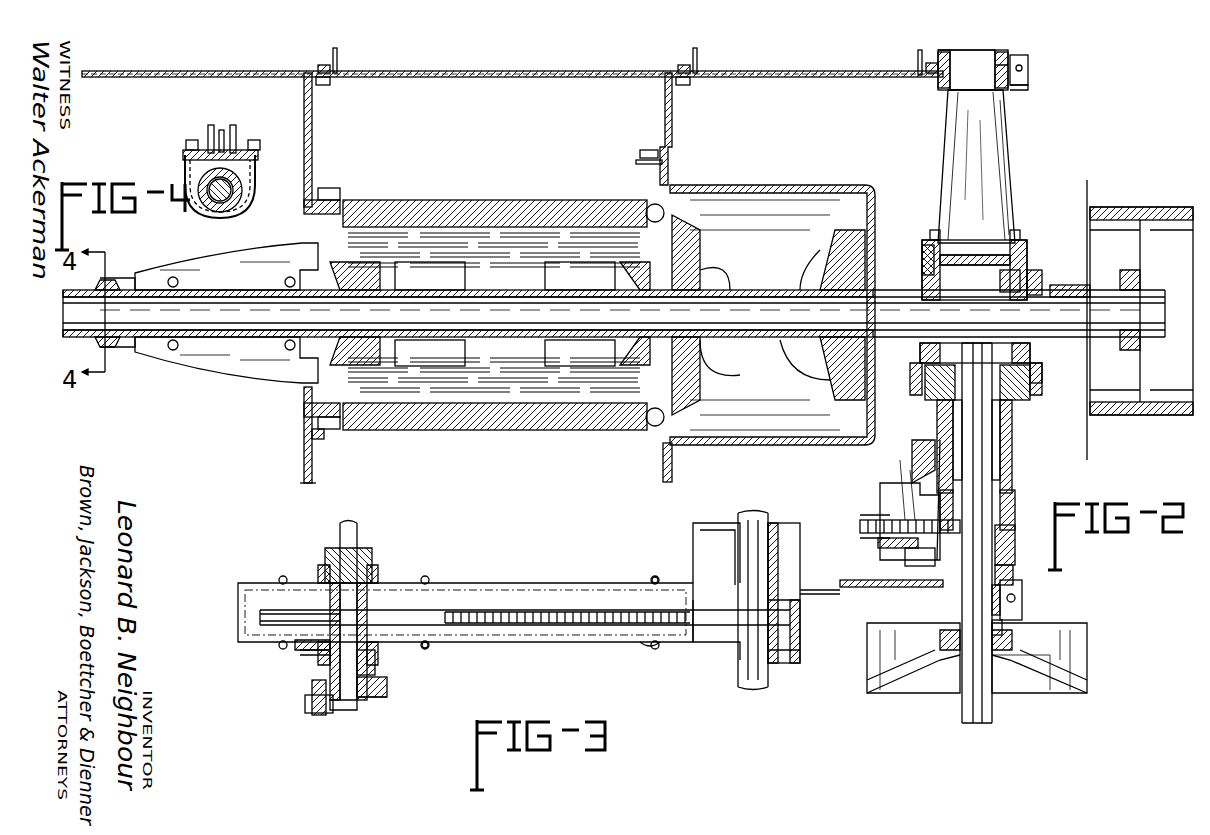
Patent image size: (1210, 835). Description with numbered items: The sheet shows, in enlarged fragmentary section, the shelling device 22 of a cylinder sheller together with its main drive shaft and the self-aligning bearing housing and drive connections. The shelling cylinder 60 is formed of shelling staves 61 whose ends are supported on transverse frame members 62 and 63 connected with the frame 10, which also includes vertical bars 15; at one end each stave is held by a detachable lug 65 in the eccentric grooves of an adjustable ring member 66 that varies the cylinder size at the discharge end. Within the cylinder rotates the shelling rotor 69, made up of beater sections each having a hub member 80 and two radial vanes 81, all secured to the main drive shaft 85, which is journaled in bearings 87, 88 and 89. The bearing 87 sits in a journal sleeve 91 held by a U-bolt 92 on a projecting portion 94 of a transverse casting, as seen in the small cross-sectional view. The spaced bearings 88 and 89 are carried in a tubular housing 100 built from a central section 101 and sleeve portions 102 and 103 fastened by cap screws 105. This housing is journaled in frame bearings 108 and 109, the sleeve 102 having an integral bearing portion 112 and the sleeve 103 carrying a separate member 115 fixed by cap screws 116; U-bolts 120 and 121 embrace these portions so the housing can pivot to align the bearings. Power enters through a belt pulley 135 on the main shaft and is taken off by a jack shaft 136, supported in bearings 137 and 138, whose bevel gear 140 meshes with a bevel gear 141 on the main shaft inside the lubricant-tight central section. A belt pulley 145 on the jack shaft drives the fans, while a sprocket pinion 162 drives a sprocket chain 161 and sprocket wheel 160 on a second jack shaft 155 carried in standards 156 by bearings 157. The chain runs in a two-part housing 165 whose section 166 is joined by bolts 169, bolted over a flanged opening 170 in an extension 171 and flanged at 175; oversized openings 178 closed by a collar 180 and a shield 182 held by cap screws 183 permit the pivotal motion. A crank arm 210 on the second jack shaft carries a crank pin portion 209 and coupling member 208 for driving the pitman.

In FIG. 2, the frame 10 is at (395, 71).
In FIG. 3, the frame 10 is at (826, 604).
In FIG. 2, the vertical bars 15 is at (335, 60).
In FIG. 2, the shelling device 22 is at (772, 185).
In FIG. 2, the shelling cylinder 60 is at (372, 200).
In FIG. 2, the shelling staves 61 is at (478, 204).
In FIG. 2, the transverse frame member 62 is at (305, 104).
In FIG. 2, the transverse frame member 63 is at (672, 118).
In FIG. 2, the detachable lug 65 is at (335, 194).
In FIG. 2, the adjustable ring member 66 is at (316, 455).
In FIG. 2, the shelling rotor 69 is at (445, 270).
In FIG. 2, the hub member 80 is at (575, 300).
In FIG. 2, the vanes 81 is at (398, 270).
In FIG. 2, the main drive shaft 85 is at (878, 300).
In FIG. 2, the bearing 87 is at (128, 345).
In FIG. 2, the bearing 88 is at (950, 270).
In FIG. 2, the bearing 89 is at (1045, 285).
In FIG. 2, the journal sleeve 91 is at (112, 286).
In FIG. 4, the journal sleeve 91 is at (232, 212).
In FIG. 4, the U-bolt 92 is at (210, 218).
In FIG. 4, the projecting portion 94 is at (208, 130).
In FIG. 2, the tubular housing 100 is at (1030, 238).
In FIG. 2, the central section 101 is at (1038, 372).
In FIG. 2, the sleeve portion 102 is at (1010, 155).
In FIG. 2, the sleeve portion 103 is at (1012, 480).
In FIG. 2, the cap screws 105 is at (932, 242).
In FIG. 2, the bearing 108 is at (1024, 68).
In FIG. 2, the bearing 109 is at (1016, 596).
In FIG. 2, the bearing portion 112 is at (995, 50).
In FIG. 2, the member 115 is at (1010, 612).
In FIG. 2, the cap screws 116 is at (1012, 572).
In FIG. 2, the U-bolt 120 is at (1022, 88).
In FIG. 2, the U-bolt 121 is at (1050, 609).
In FIG. 2, the belt pulley 135 is at (1135, 210).
In FIG. 2, the jack shaft 136 is at (970, 425).
In FIG. 3, the jack shaft 136 is at (755, 530).
In FIG. 2, the bearing 137 is at (950, 410).
In FIG. 2, the bearing 138 is at (1060, 632).
In FIG. 2, the bevel gear 140 is at (925, 380).
In FIG. 2, the bevel gear 141 is at (1000, 282).
In FIG. 2, the belt pulley 145 is at (1030, 660).
In FIG. 3, the second jack shaft 155 is at (350, 535).
In FIG. 3, the standards 156 is at (375, 660).
In FIG. 3, the bearings 157 is at (387, 680).
In FIG. 3, the sprocket wheel 160 is at (395, 608).
In FIG. 2, the sprocket chain 161 is at (870, 518).
In FIG. 3, the sprocket chain 161 is at (505, 608).
In FIG. 2, the sprocket pinion 162 is at (1000, 520).
In FIG. 3, the sprocket pinion 162 is at (790, 598).
In FIG. 3, the two-part housing 165 is at (560, 585).
In FIG. 2, the housing section 166 is at (905, 548).
In FIG. 3, the bolts 169 is at (430, 650).
In FIG. 2, the flanged opening 170 is at (900, 495).
In FIG. 2, the extension 171 is at (920, 462).
In FIG. 3, the flange 175 is at (680, 648).
In FIG. 3, the openings 178 is at (318, 572).
In FIG. 3, the collar 180 is at (366, 552).
In FIG. 3, the shield 182 is at (300, 646).
In FIG. 3, the cap screws 183 is at (305, 653).
In FIG. 3, the coupling member 208 is at (312, 715).
In FIG. 3, the crank pin portion 209 is at (340, 708).
In FIG. 3, the crank arm 210 is at (387, 698).